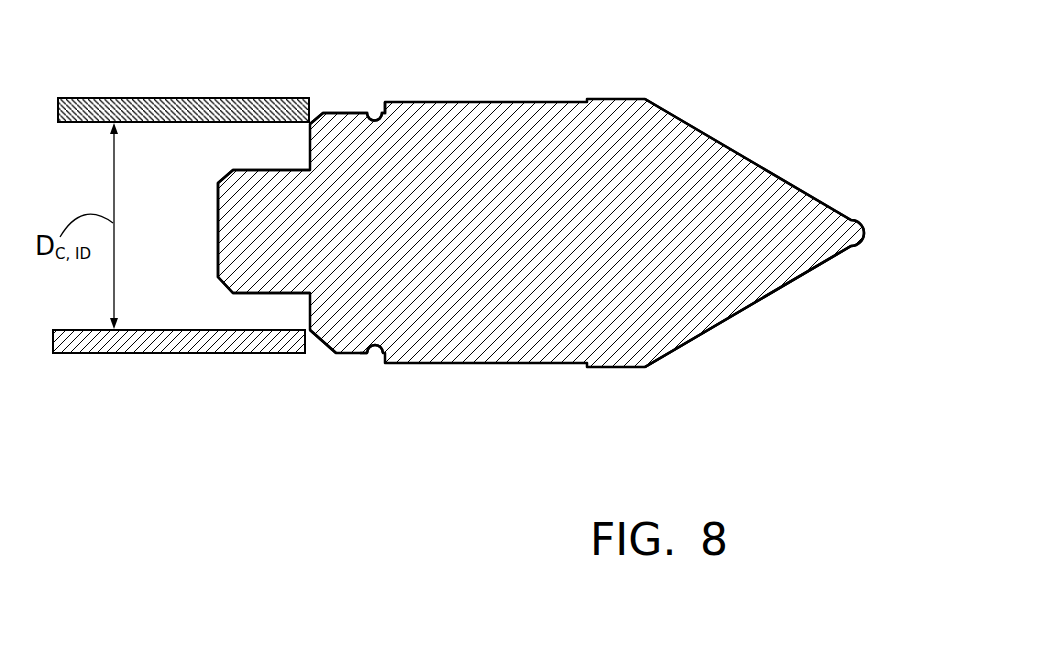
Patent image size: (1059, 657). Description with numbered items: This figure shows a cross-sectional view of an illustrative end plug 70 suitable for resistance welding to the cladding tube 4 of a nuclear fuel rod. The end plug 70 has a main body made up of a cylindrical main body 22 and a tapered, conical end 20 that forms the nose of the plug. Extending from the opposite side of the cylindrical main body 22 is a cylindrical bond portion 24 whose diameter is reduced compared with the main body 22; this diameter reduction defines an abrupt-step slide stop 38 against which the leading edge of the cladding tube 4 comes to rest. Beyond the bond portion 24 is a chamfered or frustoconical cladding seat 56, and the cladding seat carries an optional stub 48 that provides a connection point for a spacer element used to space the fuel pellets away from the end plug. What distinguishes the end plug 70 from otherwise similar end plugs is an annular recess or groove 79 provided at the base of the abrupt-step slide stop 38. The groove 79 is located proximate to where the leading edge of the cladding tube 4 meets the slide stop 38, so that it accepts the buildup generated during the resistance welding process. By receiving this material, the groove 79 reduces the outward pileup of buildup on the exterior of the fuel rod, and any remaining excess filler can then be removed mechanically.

The cladding tube 4 is at (150, 117).
The tapered end 20 is at (680, 173).
The cylindrical main body 22 is at (530, 143).
The cylindrical bond portion 24 is at (360, 140).
The abrupt-step slide stop 38 is at (380, 348).
The stub 48 is at (255, 242).
The chamfered cladding seat 56 is at (322, 338).
The end plug 70 is at (767, 317).
The annular recess or groove 79 is at (369, 352).